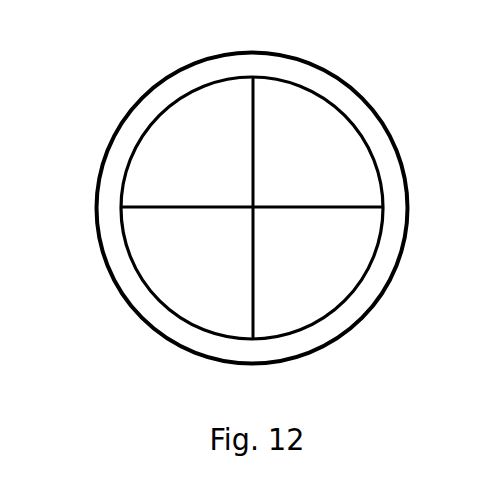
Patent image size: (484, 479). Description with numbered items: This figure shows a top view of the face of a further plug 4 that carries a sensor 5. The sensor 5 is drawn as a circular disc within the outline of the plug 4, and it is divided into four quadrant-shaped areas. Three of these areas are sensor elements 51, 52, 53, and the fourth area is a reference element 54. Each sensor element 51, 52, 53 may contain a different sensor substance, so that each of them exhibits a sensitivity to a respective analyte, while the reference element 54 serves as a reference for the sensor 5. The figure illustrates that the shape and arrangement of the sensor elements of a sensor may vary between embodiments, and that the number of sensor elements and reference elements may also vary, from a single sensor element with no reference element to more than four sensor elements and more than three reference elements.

The plug 4 is at (342, 78).
The sensor 5 is at (167, 313).
The sensor element 51 is at (219, 183).
The sensor element 52 is at (187, 278).
The sensor element 53 is at (318, 278).
The reference element 54 is at (315, 183).